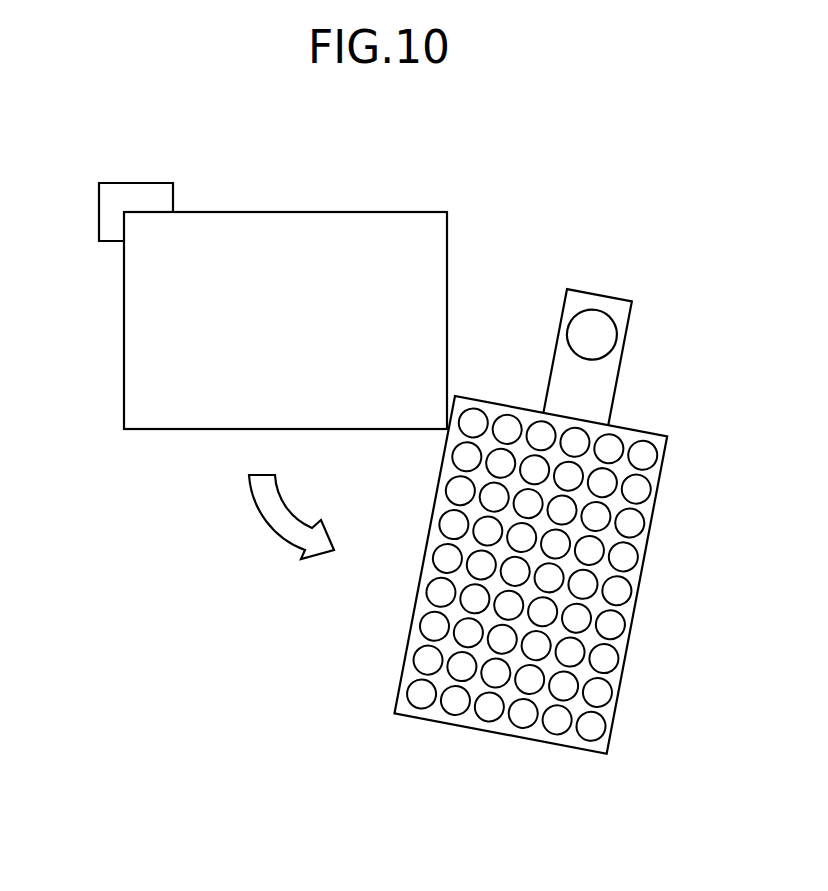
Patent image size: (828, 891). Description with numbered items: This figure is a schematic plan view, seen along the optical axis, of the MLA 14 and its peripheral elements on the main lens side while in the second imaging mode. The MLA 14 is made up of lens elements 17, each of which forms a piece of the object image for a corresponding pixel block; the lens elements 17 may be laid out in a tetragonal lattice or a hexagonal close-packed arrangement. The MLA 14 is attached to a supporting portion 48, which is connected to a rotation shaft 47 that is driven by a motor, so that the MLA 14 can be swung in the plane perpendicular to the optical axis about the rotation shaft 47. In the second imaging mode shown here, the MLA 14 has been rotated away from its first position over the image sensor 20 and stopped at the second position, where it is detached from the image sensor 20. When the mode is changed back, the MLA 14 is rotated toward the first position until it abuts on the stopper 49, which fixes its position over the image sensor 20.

The image sensor 20 is at (375, 225).
The stopper 49 is at (112, 218).
The supporting portion 48 is at (575, 300).
The rotation shaft 47 is at (602, 337).
The MLA 14 is at (668, 467).
The lens element 17 is at (422, 696).